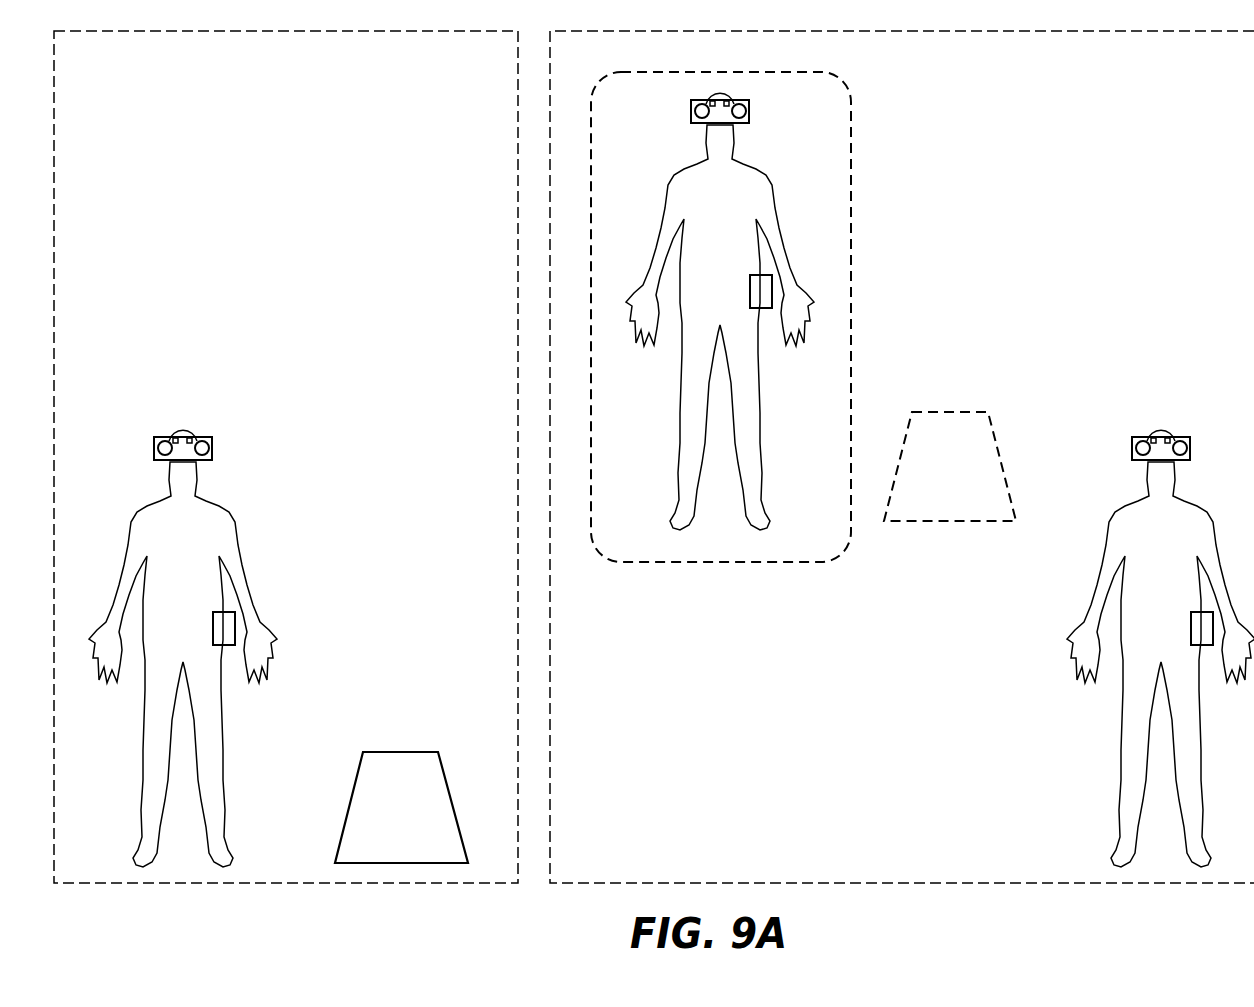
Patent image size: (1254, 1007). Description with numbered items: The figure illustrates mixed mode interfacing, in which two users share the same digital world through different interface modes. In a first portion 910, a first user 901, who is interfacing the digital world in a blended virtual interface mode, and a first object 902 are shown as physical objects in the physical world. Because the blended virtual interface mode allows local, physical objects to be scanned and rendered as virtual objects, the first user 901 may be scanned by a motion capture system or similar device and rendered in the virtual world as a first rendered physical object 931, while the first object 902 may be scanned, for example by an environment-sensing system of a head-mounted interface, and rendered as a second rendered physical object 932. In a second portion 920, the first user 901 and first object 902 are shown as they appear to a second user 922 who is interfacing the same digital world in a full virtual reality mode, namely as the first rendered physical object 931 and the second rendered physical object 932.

The first portion 910 is at (381, 184).
The first user 901 is at (161, 515).
The first object 902 is at (347, 808).
The second portion 920 is at (1061, 184).
The first rendered physical object 931 is at (852, 237).
The second rendered physical object 932 is at (1000, 457).
The second user 922 is at (1133, 515).